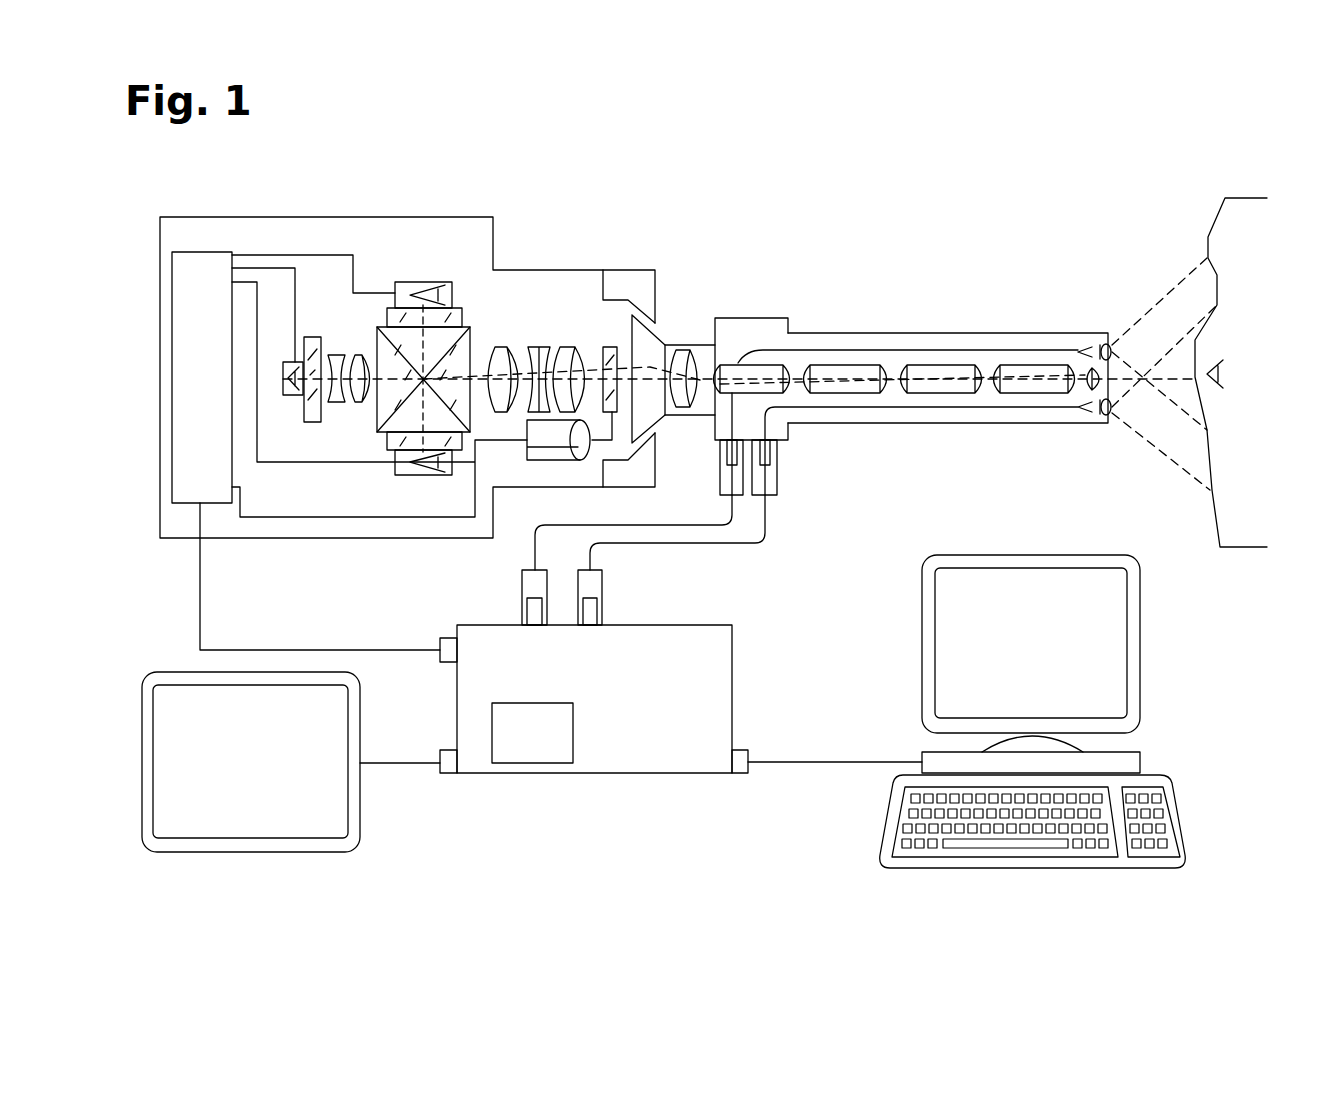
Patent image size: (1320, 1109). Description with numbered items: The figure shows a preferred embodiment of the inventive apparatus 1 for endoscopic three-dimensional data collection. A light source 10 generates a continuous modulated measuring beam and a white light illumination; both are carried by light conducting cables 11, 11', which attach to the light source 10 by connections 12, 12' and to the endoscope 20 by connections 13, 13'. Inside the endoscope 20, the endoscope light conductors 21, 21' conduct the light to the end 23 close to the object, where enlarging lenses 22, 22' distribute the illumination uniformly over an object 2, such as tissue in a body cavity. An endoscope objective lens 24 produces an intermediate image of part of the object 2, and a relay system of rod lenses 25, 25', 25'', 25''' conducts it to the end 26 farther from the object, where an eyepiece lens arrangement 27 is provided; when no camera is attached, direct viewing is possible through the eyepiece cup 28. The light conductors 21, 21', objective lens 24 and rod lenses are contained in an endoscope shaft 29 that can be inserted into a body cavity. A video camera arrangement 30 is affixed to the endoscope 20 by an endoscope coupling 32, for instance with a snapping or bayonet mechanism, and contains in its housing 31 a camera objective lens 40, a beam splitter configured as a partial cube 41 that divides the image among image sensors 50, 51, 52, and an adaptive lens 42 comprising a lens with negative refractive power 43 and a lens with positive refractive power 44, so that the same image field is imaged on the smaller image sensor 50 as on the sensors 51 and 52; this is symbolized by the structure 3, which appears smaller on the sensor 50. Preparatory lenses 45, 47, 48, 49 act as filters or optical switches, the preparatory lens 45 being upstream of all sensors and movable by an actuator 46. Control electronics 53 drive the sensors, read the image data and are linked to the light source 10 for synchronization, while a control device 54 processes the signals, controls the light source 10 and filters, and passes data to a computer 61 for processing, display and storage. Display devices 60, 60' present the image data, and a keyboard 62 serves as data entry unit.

The apparatus 1 is at (691, 176).
The object 2 is at (1243, 198).
The structure 3 is at (1224, 378).
The light source 10 is at (645, 773).
The light conducting cable 11 is at (677, 549).
The light conducting cable 11' is at (633, 540).
The connection 12 is at (626, 597).
The connection 12' is at (499, 597).
The connection 13 is at (797, 467).
The connection 13' is at (699, 467).
The endoscope 20 is at (913, 286).
The endoscope light conductor 21 is at (928, 448).
The endoscope light conductor 21' is at (912, 385).
The enlarging lens 22 is at (1118, 444).
The enlarging lens 22' is at (1122, 314).
The end close to the object 23 is at (1093, 286).
The endoscope objective lens 24 is at (1098, 392).
The rod lens 25 is at (1034, 337).
The rod lens 25' is at (941, 337).
The rod lens 25'' is at (845, 337).
The rod lens 25''' is at (770, 327).
The end farther from the object 26 is at (749, 286).
The eyepiece lens arrangement 27 is at (684, 346).
The eyepiece cup 28 is at (661, 338).
The endoscope shaft 29 is at (871, 423).
The video camera arrangement 30 is at (379, 186).
The housing 31 is at (277, 217).
The endoscope coupling 32 is at (630, 270).
The camera objective lens 40 is at (546, 323).
The beam splitter 41 is at (468, 347).
The adaptive lens 42 is at (350, 380).
The lens with negative refractive power 43 is at (334, 402).
The lens with positive refractive power 44 is at (364, 402).
The preparatory lens 45 is at (611, 347).
The actuator 46 is at (556, 460).
The preparatory lens 47 is at (313, 337).
The preparatory lens 48 is at (462, 308).
The preparatory lens 49 is at (465, 450).
The image sensor 50 is at (283, 377).
The image sensor 51 is at (422, 282).
The image sensor 52 is at (420, 475).
The control electronics 53 is at (200, 252).
The control device 54 is at (528, 763).
The display device 60 is at (288, 762).
The display device 60' is at (1075, 644).
The computer 61 is at (1140, 765).
The keyboard 62 is at (1187, 820).